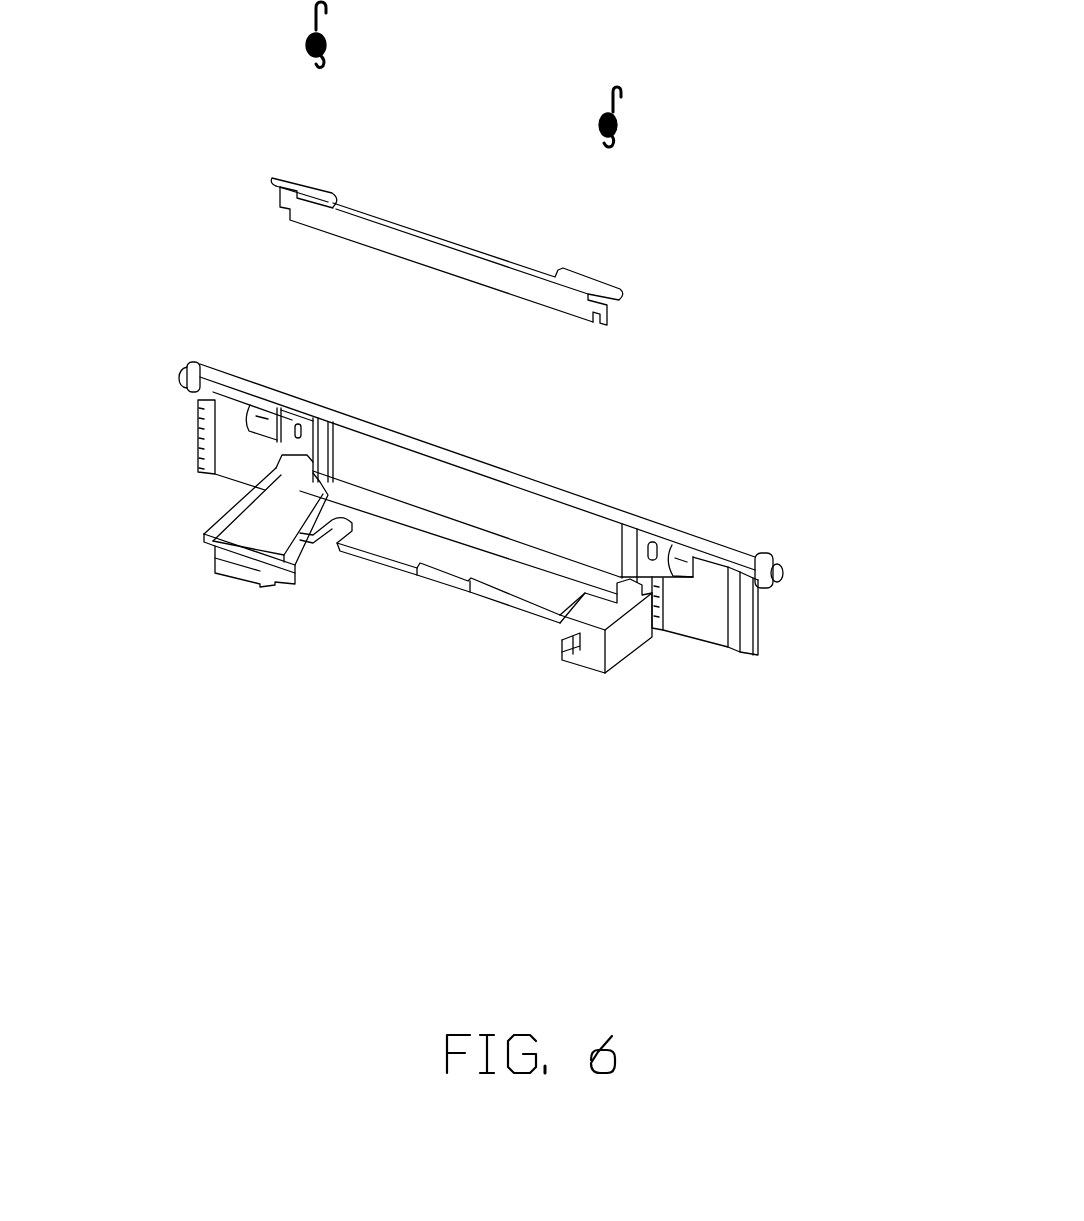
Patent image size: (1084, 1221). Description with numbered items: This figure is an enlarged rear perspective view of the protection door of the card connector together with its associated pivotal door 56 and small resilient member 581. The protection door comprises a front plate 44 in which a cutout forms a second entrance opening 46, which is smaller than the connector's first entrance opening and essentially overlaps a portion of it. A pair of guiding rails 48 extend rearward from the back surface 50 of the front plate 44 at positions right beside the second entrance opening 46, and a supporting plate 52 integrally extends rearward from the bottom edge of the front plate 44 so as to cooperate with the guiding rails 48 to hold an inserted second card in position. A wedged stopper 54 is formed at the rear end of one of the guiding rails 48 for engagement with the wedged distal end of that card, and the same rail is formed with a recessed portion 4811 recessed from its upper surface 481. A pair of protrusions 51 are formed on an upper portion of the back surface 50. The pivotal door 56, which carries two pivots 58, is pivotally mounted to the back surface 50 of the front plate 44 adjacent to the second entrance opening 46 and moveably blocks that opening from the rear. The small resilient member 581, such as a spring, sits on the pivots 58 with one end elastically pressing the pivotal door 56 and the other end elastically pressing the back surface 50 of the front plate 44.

The front plate 44 is at (760, 620).
The second entrance opening 46 is at (481, 537).
The guiding rails 48 is at (626, 640).
The upper surface 481 is at (275, 466).
The recessed portion 4811 is at (240, 543).
The back surface 50 is at (703, 612).
The protrusions 51 is at (681, 551).
The supporting plate 52 is at (397, 543).
The wedged stopper 54 is at (236, 566).
The pivotal door 56 is at (469, 204).
The pivots 58 is at (594, 272).
The small resilient member 581 is at (620, 130).